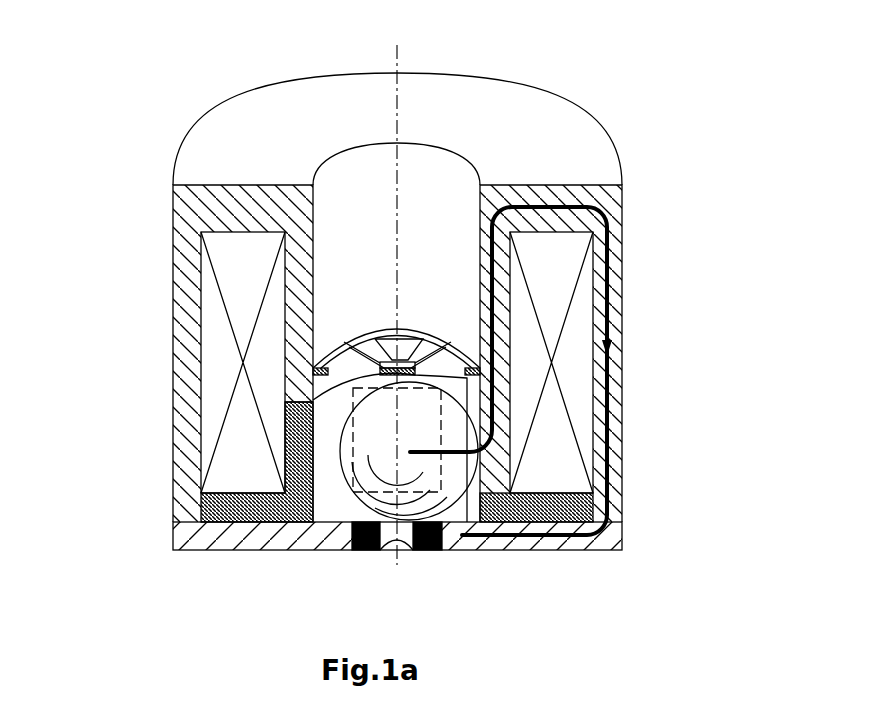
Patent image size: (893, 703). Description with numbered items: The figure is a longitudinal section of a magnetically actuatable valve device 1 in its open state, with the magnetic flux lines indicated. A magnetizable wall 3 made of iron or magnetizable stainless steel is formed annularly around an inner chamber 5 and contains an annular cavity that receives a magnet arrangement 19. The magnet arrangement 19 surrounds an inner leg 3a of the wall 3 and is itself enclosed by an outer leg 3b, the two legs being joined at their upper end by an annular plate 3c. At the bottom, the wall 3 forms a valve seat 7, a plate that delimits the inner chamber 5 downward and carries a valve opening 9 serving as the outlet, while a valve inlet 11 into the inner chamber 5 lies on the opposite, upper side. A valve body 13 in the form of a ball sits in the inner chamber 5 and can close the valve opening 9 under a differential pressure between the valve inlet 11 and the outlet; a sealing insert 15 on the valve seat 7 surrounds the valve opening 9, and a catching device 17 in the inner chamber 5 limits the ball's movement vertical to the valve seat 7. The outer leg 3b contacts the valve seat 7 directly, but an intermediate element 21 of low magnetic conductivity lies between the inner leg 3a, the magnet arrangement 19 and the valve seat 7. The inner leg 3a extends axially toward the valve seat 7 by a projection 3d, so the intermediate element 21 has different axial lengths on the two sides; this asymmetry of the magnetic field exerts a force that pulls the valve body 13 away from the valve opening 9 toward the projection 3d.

The valve device 1 is at (655, 85).
The magnetizable wall 3 is at (650, 287).
The inner leg 3a is at (298, 272).
The outer leg 3b is at (190, 408).
The annular plate 3c is at (233, 207).
The projection 3d is at (532, 505).
The inner chamber 5 is at (425, 205).
The valve seat 7 is at (469, 562).
The valve opening 9 is at (398, 566).
The valve inlet 11 is at (347, 137).
The valve body 13 is at (357, 483).
The sealing insert 15 is at (367, 552).
The catching device 17 is at (340, 343).
The magnet arrangement 19 is at (218, 342).
The intermediate element 21 is at (253, 507).